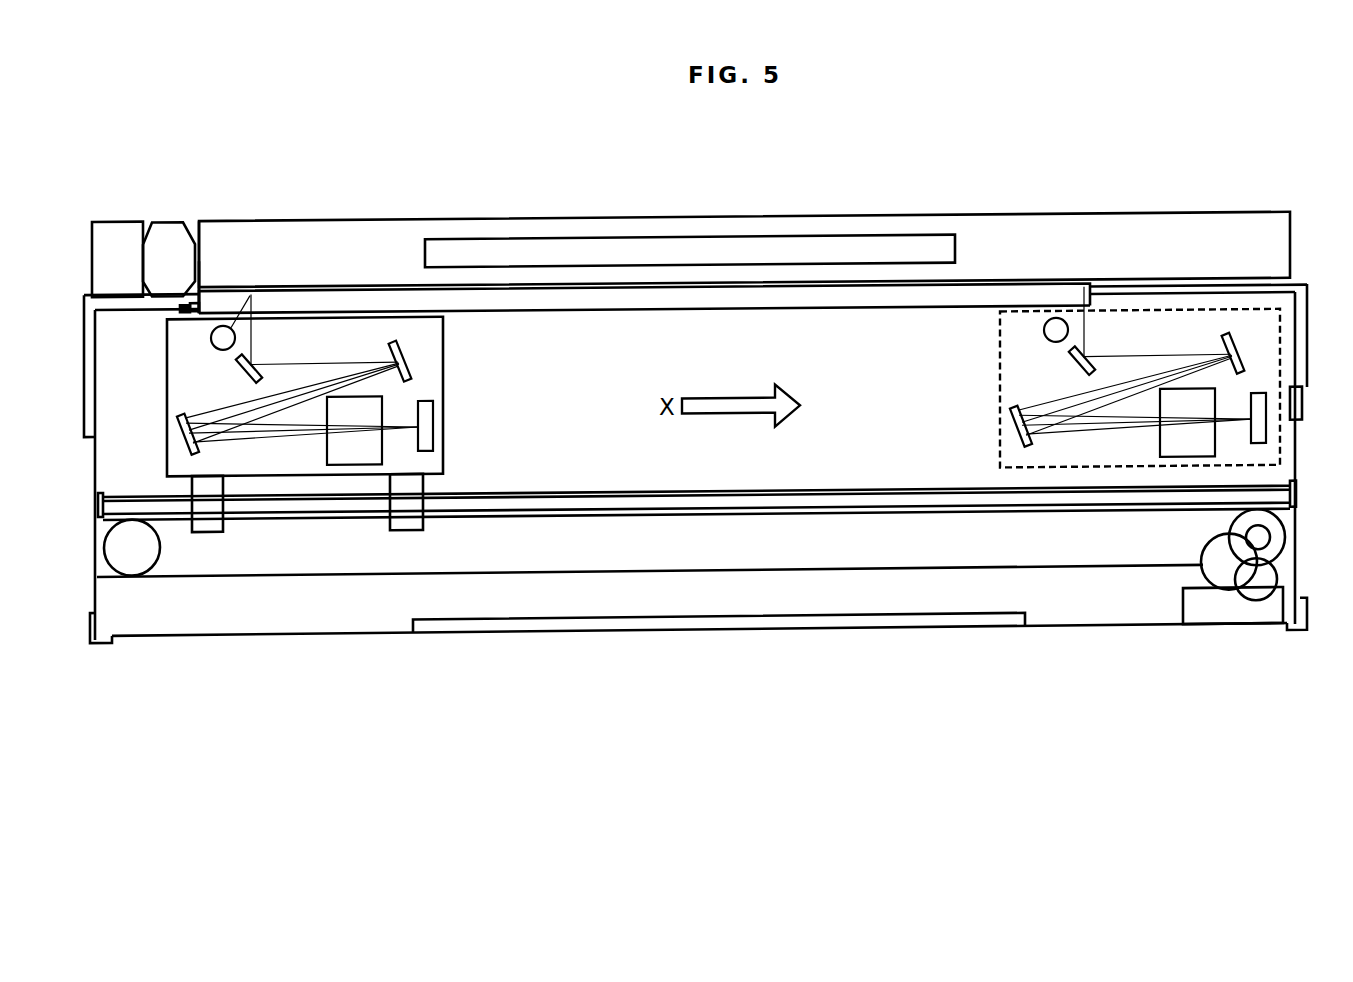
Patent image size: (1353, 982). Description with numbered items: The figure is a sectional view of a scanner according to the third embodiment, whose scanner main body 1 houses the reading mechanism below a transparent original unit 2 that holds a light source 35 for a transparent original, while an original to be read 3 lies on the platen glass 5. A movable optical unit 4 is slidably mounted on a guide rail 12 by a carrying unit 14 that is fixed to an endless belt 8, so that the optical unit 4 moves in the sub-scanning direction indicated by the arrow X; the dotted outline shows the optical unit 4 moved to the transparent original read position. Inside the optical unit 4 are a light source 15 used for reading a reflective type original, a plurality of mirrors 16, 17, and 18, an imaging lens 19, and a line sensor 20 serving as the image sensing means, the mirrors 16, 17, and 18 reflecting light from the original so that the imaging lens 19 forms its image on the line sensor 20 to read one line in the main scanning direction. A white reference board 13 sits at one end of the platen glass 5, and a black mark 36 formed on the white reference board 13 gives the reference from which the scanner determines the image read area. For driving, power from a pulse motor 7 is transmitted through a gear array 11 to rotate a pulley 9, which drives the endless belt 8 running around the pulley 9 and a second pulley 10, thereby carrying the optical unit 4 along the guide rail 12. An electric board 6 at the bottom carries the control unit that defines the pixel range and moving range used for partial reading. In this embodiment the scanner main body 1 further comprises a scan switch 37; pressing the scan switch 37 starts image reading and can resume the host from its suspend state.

The scanner main body 1 is at (525, 632).
The transparent original unit 2 is at (993, 267).
The original to be read 3 is at (540, 289).
The movable optical unit 4 is at (388, 320).
The platen glass 5 is at (828, 288).
The electric board 6 is at (695, 624).
The pulse motor 7 is at (1180, 602).
The endless belt 8 is at (313, 578).
The pulley 9 is at (1285, 538).
The pulley 10 is at (112, 578).
The gear array 11 is at (1203, 573).
The guide rail 12 is at (851, 489).
The white reference board 13 is at (199, 288).
The carrying unit 14 is at (210, 533).
The light source 15 is at (212, 339).
The mirror 16 is at (238, 372).
The mirror 17 is at (407, 362).
The mirror 18 is at (181, 432).
The imaging lens 19 is at (383, 452).
The line sensor 20 is at (434, 424).
The light source for a transparent original 35 is at (690, 236).
The black mark 36 is at (189, 304).
The scan switch 37 is at (1295, 422).